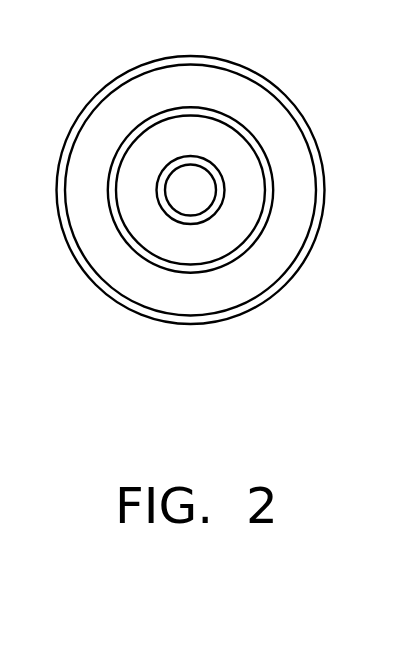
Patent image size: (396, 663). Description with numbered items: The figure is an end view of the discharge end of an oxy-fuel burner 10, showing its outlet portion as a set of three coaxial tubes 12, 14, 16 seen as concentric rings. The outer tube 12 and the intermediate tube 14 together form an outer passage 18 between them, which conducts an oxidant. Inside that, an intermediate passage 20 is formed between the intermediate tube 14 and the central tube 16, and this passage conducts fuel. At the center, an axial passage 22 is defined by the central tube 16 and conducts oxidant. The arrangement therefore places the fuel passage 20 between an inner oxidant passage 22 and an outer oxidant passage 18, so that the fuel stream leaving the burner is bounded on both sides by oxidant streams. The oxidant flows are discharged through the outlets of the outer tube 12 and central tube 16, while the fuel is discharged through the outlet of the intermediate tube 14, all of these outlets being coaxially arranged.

The oxy-fuel burner 10 is at (316, 92).
The outer tube 12 is at (250, 70).
The intermediate tube 14 is at (273, 202).
The central tube 16 is at (217, 215).
The outer passage 18 is at (213, 290).
The intermediate passage 20 is at (190, 250).
The axial passage 22 is at (190, 190).